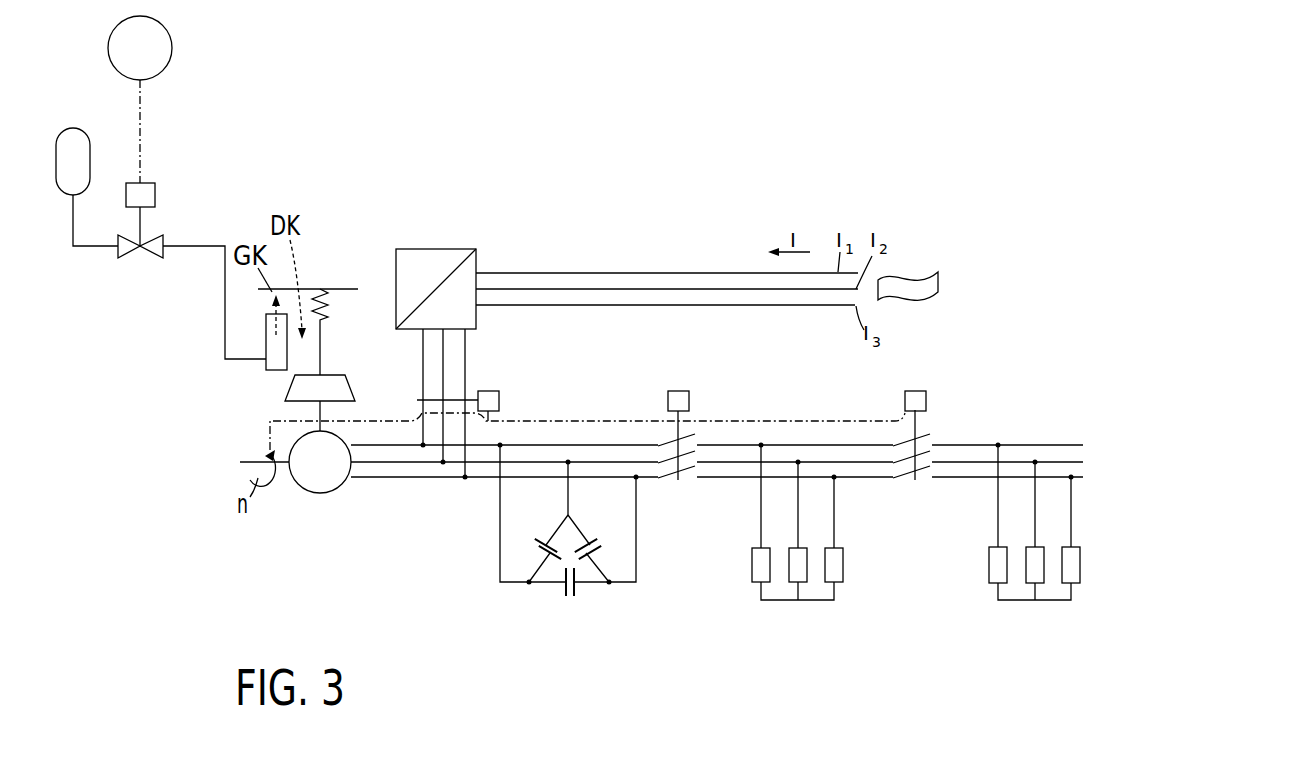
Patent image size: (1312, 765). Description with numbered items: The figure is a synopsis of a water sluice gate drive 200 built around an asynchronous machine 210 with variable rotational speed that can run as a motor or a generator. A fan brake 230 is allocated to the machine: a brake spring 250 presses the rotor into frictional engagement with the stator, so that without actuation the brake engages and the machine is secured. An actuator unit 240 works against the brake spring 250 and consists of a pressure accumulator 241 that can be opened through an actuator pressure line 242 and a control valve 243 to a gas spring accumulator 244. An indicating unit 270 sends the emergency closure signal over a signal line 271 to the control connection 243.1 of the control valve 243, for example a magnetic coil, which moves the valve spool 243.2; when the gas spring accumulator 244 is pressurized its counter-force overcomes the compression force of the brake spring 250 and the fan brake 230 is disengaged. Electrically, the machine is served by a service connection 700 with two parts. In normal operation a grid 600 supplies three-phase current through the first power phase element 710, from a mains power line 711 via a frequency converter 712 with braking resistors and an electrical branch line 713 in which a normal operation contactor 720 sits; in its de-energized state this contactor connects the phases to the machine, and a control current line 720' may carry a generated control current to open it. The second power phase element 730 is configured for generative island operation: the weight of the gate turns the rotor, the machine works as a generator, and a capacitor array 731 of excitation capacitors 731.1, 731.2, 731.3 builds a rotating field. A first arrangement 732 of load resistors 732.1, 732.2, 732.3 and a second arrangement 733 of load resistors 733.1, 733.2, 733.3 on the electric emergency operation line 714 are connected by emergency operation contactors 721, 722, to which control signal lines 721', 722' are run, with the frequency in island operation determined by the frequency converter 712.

The water sluice gate drive 200 is at (238, 543).
The asynchronous machine 210 is at (320, 494).
The fan brake 230 is at (289, 397).
The actuator unit 240 is at (272, 184).
The pressure accumulator 241 is at (57, 162).
The actuator pressure line 242 is at (88, 248).
The control valve 243 is at (128, 258).
The control connection 243.1 is at (158, 193).
The valve spool 243.2 is at (143, 233).
The gas spring accumulator 244 is at (265, 368).
The brake spring 250 is at (325, 320).
The indicating unit 270 is at (172, 53).
The signal line 271 is at (142, 118).
The grid 600 is at (912, 272).
The service connection 700 is at (848, 178).
The first power phase element 710 is at (1003, 208).
The mains power line 711 is at (592, 272).
The frequency converter 712 is at (428, 249).
The electrical branch line 713 is at (458, 342).
The electric emergency operation line 714 is at (785, 450).
The normal operation contactor 720 is at (468, 374).
The control current line 720' is at (522, 405).
The emergency operation contactor 721 is at (701, 411).
The control signal line 721' is at (640, 406).
The emergency operation contactor 722 is at (939, 411).
The control signal line 722' is at (879, 400).
The second power phase element 730 is at (1111, 377).
The capacitor array 731 is at (558, 541).
The excitation capacitor 731.1 is at (553, 562).
The excitation capacitor 731.2 is at (578, 592).
The excitation capacitor 731.3 is at (605, 553).
The first arrangement of load resistors 732 is at (797, 548).
The load resistor 732.1 is at (761, 586).
The load resistor 732.2 is at (803, 588).
The load resistor 732.3 is at (840, 572).
The second arrangement of load resistors 733 is at (1039, 548).
The load resistor 733.1 is at (990, 588).
The load resistor 733.2 is at (1040, 588).
The load resistor 733.3 is at (1076, 572).